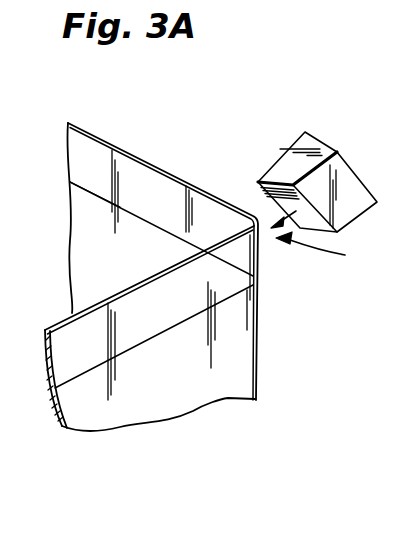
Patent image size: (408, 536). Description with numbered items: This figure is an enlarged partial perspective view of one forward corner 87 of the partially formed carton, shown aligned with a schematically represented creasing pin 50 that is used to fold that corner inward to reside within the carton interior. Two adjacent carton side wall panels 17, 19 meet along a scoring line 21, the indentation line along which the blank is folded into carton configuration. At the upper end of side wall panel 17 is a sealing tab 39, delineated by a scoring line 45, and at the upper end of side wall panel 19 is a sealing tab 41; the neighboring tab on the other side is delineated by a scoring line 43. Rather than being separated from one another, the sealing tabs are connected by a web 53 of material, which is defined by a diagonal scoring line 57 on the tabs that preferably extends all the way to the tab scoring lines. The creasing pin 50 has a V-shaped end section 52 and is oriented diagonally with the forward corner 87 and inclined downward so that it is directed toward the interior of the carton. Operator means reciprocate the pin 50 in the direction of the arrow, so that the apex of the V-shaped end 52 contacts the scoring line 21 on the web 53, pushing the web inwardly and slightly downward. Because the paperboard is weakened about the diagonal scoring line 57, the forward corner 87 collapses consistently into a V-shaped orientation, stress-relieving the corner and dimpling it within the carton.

The carton side wall panel 17 is at (190, 388).
The carton side wall panel 19 is at (107, 230).
The scoring line 21 is at (260, 252).
The sealing tab 39 is at (80, 336).
The sealing tab 41 is at (103, 162).
The scoring line 43 is at (110, 202).
The scoring line 45 is at (56, 390).
The creasing pin 50 is at (318, 145).
The V-shaped end section 52 is at (267, 178).
The web 53 is at (236, 250).
The diagonal scoring line 57 is at (226, 218).
The forward corner 87 is at (328, 242).